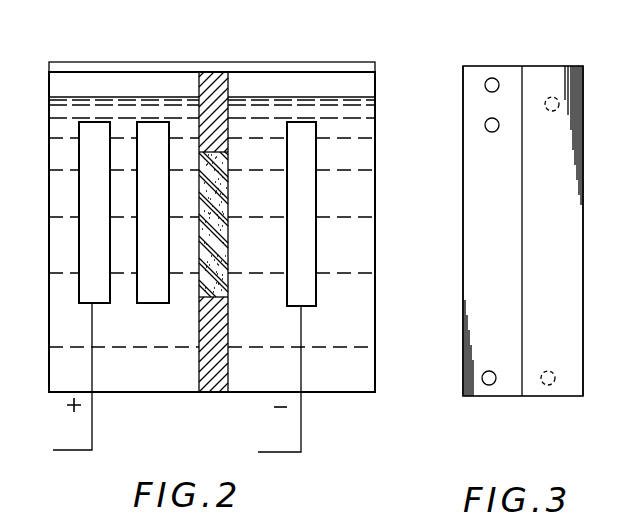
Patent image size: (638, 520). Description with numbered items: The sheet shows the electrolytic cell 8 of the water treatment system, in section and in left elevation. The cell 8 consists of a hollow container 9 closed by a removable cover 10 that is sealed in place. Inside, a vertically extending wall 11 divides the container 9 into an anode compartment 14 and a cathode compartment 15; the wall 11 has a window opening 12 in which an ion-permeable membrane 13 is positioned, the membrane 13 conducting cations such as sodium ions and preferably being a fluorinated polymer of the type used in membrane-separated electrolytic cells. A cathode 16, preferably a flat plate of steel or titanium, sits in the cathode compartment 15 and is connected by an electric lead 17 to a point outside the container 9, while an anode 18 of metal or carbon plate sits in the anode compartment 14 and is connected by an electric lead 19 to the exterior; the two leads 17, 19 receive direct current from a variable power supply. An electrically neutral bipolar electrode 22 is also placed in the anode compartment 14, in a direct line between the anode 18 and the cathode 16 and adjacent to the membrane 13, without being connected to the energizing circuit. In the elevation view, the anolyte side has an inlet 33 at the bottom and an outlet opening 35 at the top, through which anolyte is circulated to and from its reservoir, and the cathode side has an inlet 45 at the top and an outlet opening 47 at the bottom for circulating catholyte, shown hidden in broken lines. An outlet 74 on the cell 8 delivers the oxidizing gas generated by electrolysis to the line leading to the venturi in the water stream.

In FIG. 2, the electrolytic cell 8 is at (266, 58).
In FIG. 3, the electrolytic cell 8 is at (533, 63).
In FIG. 2, the hollow container 9 is at (377, 185).
In FIG. 3, the hollow container 9 is at (502, 397).
In FIG. 2, the removable cover 10 is at (130, 62).
In FIG. 2, the vertically extending wall 11 is at (210, 393).
In FIG. 2, the window opening 12 is at (229, 266).
In FIG. 2, the ion-permeable membrane 13 is at (229, 192).
In FIG. 2, the anode compartment 14 is at (119, 366).
In FIG. 3, the anode compartment 14 is at (485, 240).
In FIG. 2, the cathode compartment 15 is at (330, 365).
In FIG. 3, the cathode compartment 15 is at (560, 237).
In FIG. 2, the cathode 16 is at (303, 198).
In FIG. 2, the electric lead 17 is at (275, 453).
In FIG. 2, the anode 18 is at (93, 205).
In FIG. 2, the electric lead 19 is at (72, 451).
In FIG. 2, the electrically neutral bipolar electrode 22 is at (146, 290).
In FIG. 3, the inlet 33 is at (487, 384).
In FIG. 3, the outlet opening 35 is at (492, 133).
In FIG. 3, the inlet 45 is at (560, 104).
In FIG. 3, the outlet opening 47 is at (550, 370).
In FIG. 3, the outlet 74 is at (492, 78).